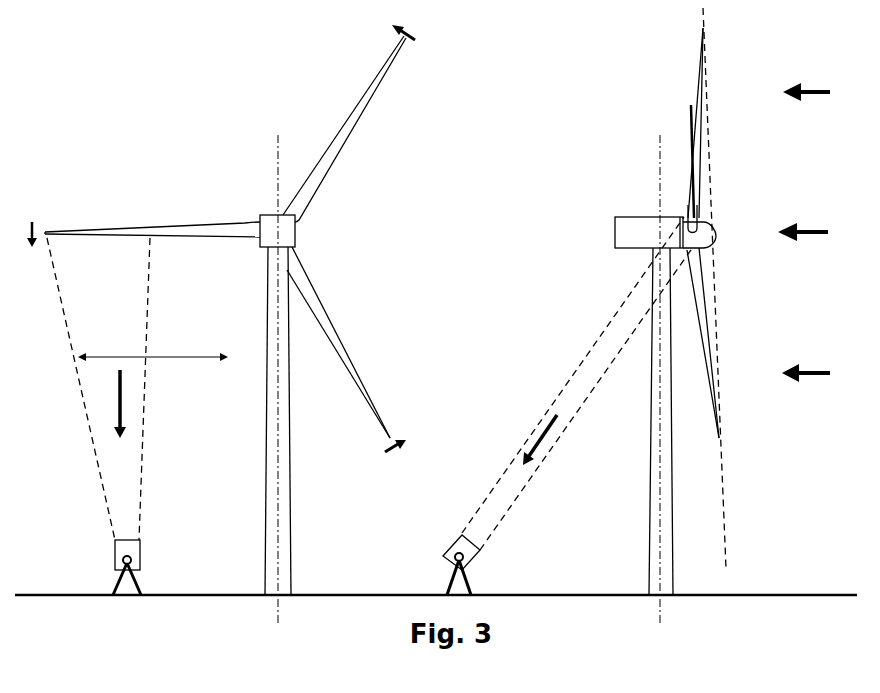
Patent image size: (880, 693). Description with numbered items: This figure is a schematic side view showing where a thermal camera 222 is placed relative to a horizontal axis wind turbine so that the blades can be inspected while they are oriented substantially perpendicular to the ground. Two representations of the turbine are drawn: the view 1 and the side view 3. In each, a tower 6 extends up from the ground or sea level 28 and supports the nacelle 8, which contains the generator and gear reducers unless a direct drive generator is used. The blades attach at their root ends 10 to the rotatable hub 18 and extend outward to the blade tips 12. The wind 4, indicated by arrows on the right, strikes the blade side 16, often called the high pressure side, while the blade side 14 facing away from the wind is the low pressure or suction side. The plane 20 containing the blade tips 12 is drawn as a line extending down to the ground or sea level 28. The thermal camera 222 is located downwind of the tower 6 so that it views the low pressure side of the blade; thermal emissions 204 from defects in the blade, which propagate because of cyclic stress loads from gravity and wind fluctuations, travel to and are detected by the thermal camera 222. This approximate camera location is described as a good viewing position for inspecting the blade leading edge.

The view from behind the turbine 1 is at (256, 150).
The FIG. 3 side view 3 is at (641, 139).
The wind 4 is at (819, 97).
The tower 6 is at (272, 408).
The nacelle 8 is at (270, 240).
The root end 10 is at (260, 229).
The blade tip 12 is at (47, 236).
The blade side facing away from the wind 14 is at (318, 312).
The blade side facing the wind 16 is at (706, 308).
The rotatable hub 18 is at (713, 232).
The plane containing the blade tips 20 is at (726, 508).
The ground or sea level 28 is at (346, 594).
The thermal emissions 204 is at (112, 468).
The thermal camera 222 is at (133, 557).